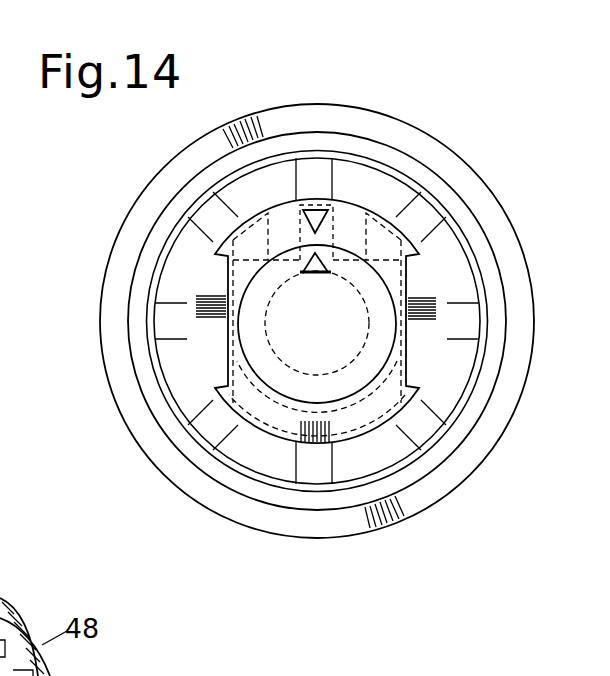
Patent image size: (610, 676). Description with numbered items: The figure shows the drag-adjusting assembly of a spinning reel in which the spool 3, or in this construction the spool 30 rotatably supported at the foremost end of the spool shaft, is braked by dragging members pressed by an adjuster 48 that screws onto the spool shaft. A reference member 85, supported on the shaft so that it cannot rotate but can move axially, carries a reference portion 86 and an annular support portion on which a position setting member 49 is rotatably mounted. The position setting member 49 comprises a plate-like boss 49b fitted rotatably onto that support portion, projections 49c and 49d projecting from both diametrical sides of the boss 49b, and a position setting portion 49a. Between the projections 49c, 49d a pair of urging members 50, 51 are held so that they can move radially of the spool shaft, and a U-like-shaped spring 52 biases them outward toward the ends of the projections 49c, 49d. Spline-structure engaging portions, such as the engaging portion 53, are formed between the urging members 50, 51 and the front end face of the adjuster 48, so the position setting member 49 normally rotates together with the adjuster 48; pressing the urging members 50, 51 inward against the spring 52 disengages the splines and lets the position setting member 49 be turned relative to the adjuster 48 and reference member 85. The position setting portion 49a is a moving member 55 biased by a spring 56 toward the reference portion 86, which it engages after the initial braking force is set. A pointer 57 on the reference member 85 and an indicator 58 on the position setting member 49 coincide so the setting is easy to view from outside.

The spool 3 is at (524, 350).
The spool 30 is at (482, 194).
The adjuster 48 is at (358, 207).
The position setting member 49 is at (406, 231).
The position setting portion 49a is at (330, 272).
The plate-like boss 49b is at (246, 238).
The projection 49c is at (361, 172).
The projection 49d is at (282, 437).
The urging member 50 is at (207, 283).
The urging member 51 is at (437, 291).
The U-like-shaped spring 52 is at (262, 421).
The engaging portion 53 is at (0, 620).
The moving member 55 is at (378, 210).
The spring 56 is at (311, 204).
The pointer 57 is at (303, 275).
The indicator 58 is at (323, 206).
The reference member 85 is at (365, 368).
The reference portion 86 is at (340, 278).